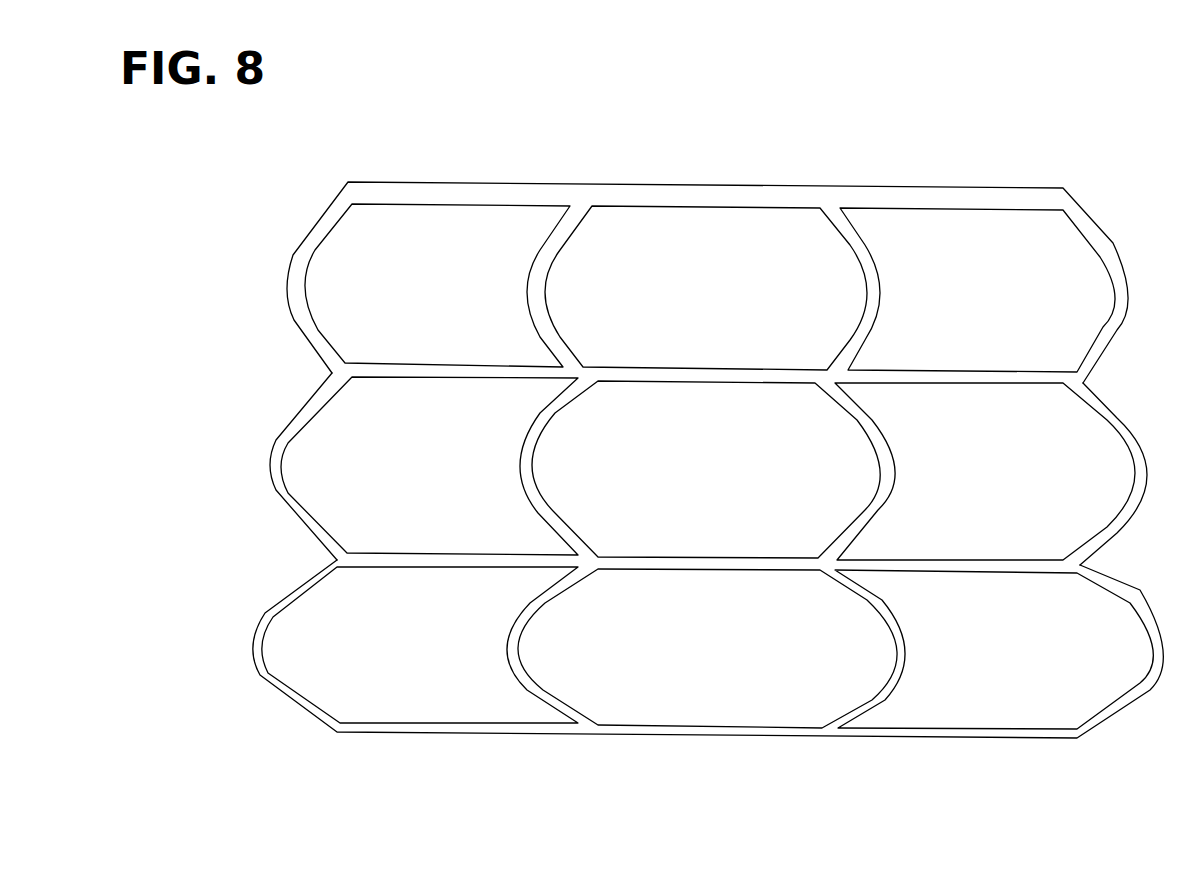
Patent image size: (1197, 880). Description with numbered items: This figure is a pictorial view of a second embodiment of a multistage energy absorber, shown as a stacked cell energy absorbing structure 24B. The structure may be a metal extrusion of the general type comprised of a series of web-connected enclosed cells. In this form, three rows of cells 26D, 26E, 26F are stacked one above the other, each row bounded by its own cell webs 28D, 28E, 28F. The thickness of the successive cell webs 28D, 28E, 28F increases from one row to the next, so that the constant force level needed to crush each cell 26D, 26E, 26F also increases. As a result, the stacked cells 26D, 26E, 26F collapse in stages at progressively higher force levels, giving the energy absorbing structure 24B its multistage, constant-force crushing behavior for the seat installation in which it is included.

The stacked cell energy absorbing structure 24B is at (675, 426).
The cell 26D is at (250, 636).
The cell 26E is at (288, 521).
The cell 26F is at (290, 319).
The cell web 28D is at (262, 644).
The cell web 28E is at (880, 470).
The cell web 28F is at (305, 289).